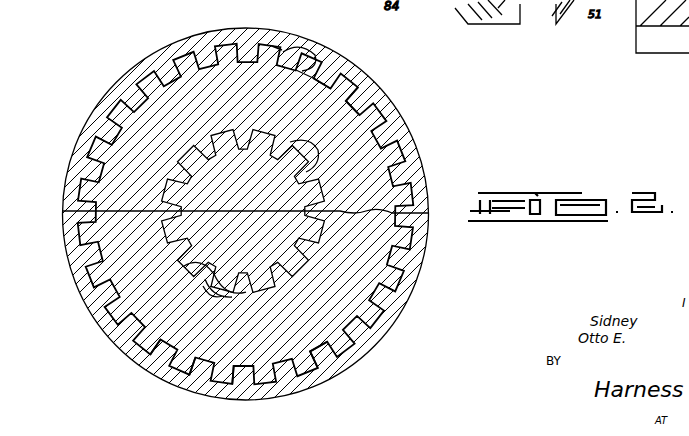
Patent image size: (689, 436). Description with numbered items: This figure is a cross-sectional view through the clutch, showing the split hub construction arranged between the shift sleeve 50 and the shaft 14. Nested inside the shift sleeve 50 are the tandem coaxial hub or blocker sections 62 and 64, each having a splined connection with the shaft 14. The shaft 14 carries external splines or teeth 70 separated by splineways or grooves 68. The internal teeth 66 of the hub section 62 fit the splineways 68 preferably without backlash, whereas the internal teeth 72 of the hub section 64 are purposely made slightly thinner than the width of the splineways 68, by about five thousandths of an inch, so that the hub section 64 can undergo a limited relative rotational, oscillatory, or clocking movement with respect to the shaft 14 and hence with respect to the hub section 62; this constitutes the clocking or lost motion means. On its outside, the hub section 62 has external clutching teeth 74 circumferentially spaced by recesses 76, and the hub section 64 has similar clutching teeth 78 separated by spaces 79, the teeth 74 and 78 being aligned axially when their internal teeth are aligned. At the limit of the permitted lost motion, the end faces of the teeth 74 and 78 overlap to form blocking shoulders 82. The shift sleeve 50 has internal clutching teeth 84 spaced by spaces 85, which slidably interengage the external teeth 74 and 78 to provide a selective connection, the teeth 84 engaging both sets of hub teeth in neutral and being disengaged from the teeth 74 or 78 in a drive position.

The shaft 14 is at (288, 192).
The shift sleeve 50 is at (412, 259).
The hub section 62 is at (330, 305).
The hub section 64 is at (363, 152).
The internal teeth of hub section 62 66 is at (213, 294).
The splineways 68 is at (240, 161).
The splines of the shaft 70 is at (184, 266).
The internal teeth of hub section 64 72 is at (316, 160).
The external clutching teeth 74 is at (193, 363).
The recesses 76 is at (160, 353).
The clutching teeth 78 is at (273, 44).
The spaces 79 is at (312, 69).
The blocking shoulders 82 is at (250, 370).
The internal clutching teeth 84 is at (292, 58).
The spaces 85 is at (310, 67).